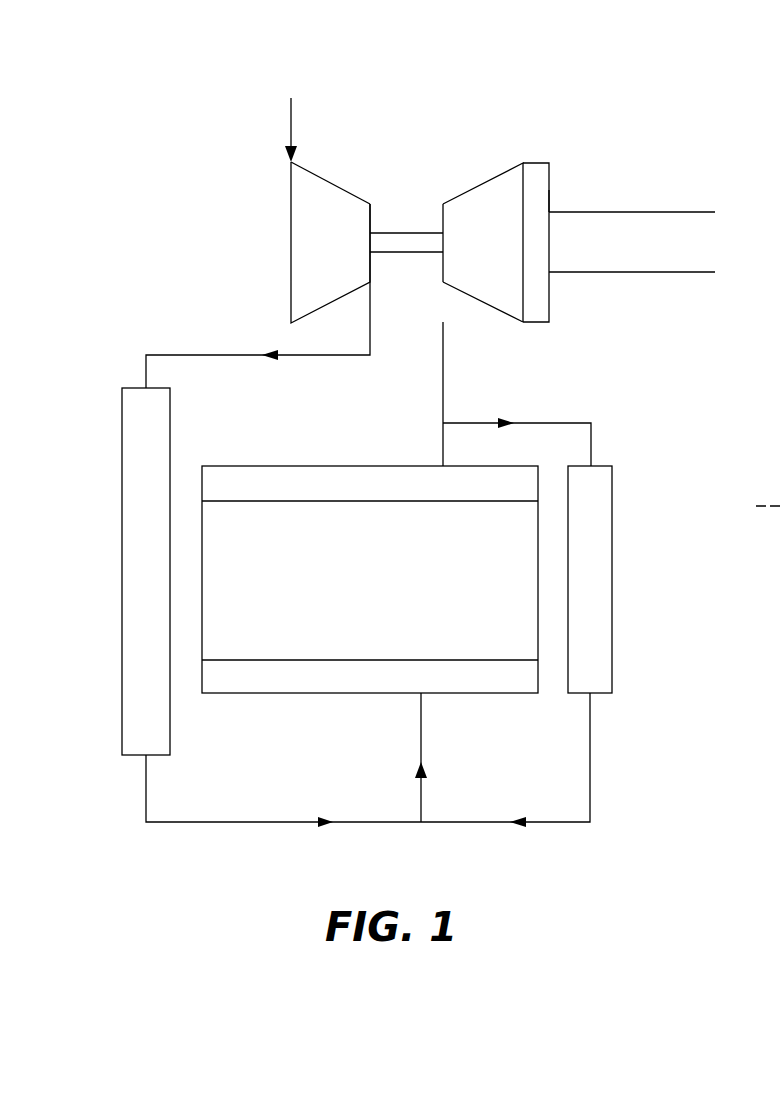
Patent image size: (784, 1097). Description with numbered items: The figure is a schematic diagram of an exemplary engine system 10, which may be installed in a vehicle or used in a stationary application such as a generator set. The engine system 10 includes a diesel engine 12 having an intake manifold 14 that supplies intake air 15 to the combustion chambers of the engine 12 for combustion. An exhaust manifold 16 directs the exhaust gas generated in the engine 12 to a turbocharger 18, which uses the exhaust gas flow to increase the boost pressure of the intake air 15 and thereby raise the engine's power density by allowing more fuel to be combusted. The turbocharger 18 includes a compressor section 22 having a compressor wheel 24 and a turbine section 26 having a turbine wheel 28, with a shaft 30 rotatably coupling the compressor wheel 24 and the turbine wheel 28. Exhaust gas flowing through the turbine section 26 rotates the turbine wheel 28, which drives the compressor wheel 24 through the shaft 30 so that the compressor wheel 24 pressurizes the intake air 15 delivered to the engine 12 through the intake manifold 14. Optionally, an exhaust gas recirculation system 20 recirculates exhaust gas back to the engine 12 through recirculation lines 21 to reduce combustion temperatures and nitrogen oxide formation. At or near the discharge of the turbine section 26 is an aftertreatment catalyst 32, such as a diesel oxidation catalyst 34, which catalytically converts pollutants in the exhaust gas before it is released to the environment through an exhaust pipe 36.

The engine system 10 is at (720, 110).
The diesel engine 12 is at (250, 515).
The intake manifold 14 is at (242, 822).
The intake air 15 is at (291, 123).
The exhaust manifold 16 is at (443, 375).
The turbocharger 18 is at (412, 143).
The exhaust gas recirculation (EGR) system 20 is at (636, 427).
The recirculation lines 21 is at (590, 759).
The compressor section 22 is at (255, 295).
The compressor wheel 24 is at (330, 190).
The turbine section 26 is at (478, 152).
The turbine wheel 28 is at (487, 283).
The shaft 30 is at (400, 237).
The aftertreatment catalyst 32 is at (537, 168).
The diesel oxidation catalyst (DOC) 34 is at (547, 197).
The exhaust pipe 36 is at (677, 212).